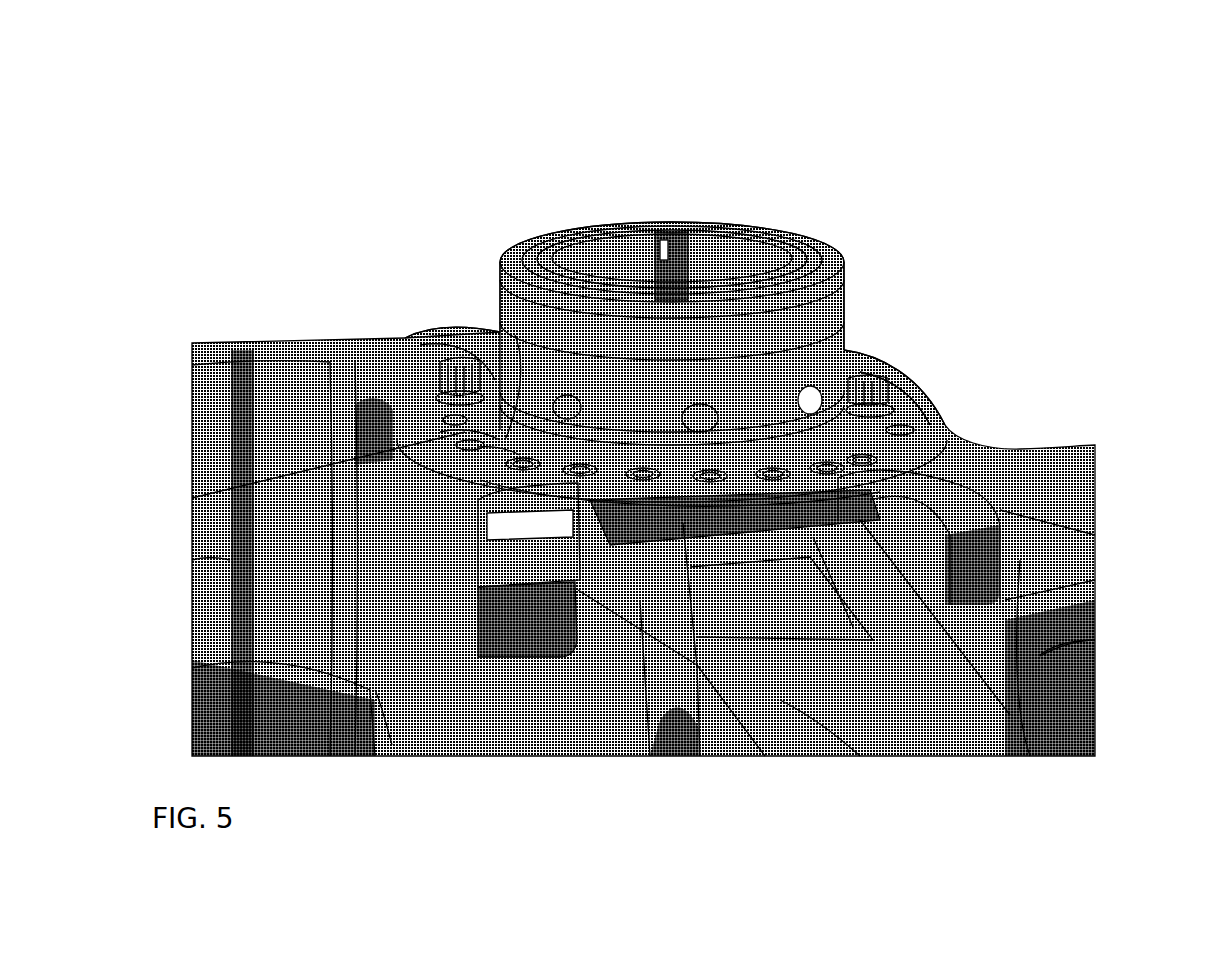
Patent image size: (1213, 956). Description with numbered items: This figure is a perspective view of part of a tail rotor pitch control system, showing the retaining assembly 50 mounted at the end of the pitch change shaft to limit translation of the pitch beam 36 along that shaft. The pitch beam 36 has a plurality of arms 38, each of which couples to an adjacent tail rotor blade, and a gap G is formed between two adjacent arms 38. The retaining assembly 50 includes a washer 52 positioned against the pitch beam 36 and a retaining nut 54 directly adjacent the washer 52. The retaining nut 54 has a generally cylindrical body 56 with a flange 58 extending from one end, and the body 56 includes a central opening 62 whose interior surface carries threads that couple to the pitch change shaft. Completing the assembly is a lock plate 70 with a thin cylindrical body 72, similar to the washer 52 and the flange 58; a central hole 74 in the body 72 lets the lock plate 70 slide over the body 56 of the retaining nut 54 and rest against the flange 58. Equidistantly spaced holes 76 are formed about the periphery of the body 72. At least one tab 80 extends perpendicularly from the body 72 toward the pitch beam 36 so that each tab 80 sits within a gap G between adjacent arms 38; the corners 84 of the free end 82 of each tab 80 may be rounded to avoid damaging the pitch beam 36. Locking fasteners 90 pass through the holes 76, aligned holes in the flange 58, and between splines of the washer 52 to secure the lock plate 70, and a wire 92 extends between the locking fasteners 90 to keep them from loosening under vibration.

The pitch beam 36 is at (440, 352).
The arms 38 is at (205, 560).
The retaining assembly 50 is at (371, 128).
The washer 52 is at (1010, 715).
The retaining nut 54 is at (522, 219).
The cylindrical body 56 is at (850, 325).
The flange 58 is at (686, 520).
The central opening 62 is at (788, 242).
The lock plate 70 is at (915, 354).
The cylindrical body 72 is at (925, 404).
The central hole 74 is at (515, 380).
The holes 76 is at (477, 447).
The tab 80 is at (987, 515).
The free end 82 is at (517, 660).
The corners 84 is at (515, 657).
The locking fastener 90 is at (432, 355).
The wire 92 is at (845, 443).
The gap G is at (1040, 656).